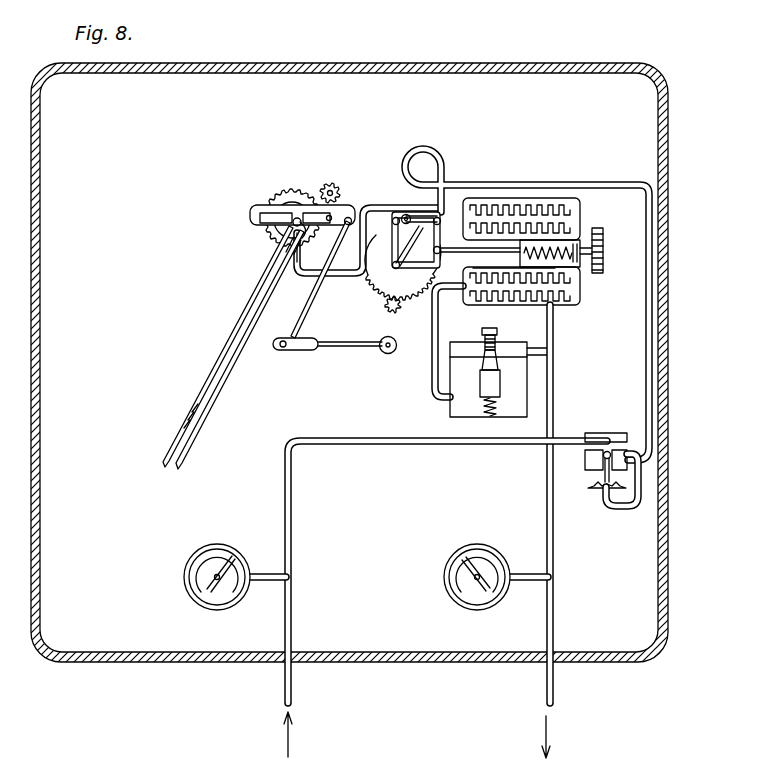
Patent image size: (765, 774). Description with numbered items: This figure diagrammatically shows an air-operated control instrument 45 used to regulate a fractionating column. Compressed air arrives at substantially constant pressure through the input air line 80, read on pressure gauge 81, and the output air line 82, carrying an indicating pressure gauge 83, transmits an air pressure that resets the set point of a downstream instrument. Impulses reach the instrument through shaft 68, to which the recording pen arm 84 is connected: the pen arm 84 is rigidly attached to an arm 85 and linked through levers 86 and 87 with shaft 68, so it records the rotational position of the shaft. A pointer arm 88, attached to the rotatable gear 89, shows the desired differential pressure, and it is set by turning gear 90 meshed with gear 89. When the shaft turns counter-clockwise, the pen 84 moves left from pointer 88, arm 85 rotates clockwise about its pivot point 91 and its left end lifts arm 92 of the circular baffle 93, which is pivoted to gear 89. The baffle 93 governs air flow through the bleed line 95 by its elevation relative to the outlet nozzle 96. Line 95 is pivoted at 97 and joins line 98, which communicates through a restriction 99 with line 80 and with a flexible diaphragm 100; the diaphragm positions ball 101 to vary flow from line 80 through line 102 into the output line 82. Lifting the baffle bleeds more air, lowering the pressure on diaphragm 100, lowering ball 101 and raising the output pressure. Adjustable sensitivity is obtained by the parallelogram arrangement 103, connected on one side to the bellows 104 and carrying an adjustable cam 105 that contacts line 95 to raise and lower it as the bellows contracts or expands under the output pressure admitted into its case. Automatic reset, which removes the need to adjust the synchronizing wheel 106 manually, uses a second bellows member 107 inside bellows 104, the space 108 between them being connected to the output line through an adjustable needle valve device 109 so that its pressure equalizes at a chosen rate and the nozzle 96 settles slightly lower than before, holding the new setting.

The control instrument 45 is at (432, 50).
The shaft 68 is at (385, 356).
The input air line 80 is at (292, 683).
The pressure gauge 81 is at (197, 587).
The output air line 82 is at (551, 690).
The indicating pressure gauge 83 is at (457, 587).
The recording pen arm 84 is at (208, 378).
The arm 85 is at (347, 207).
The lever 86 is at (306, 316).
The lever 87 is at (312, 352).
The pointer arm 88 is at (224, 390).
The rotatable gear 89 is at (298, 192).
The gear 90 is at (336, 185).
The pivot point 91 is at (293, 234).
The arm of the circular baffle 92 is at (285, 224).
The circular baffle 93 is at (300, 270).
The bleed line 95 is at (337, 274).
The outlet nozzle 96 is at (300, 250).
The pivot 97 is at (462, 236).
The line 98 is at (530, 182).
The restriction 99 is at (620, 434).
The flexible diaphragm 100 is at (614, 500).
The ball 101 is at (606, 442).
The line 102 is at (592, 483).
The adjustable parallelogram arrangement 103 is at (424, 300).
The bellows 104 is at (540, 210).
The adjustable cam 105 is at (406, 215).
The synchronizing wheel 106 is at (603, 258).
The second bellows member 107 is at (505, 268).
The space 108 is at (486, 297).
The adjustable needle valve device 109 is at (520, 372).